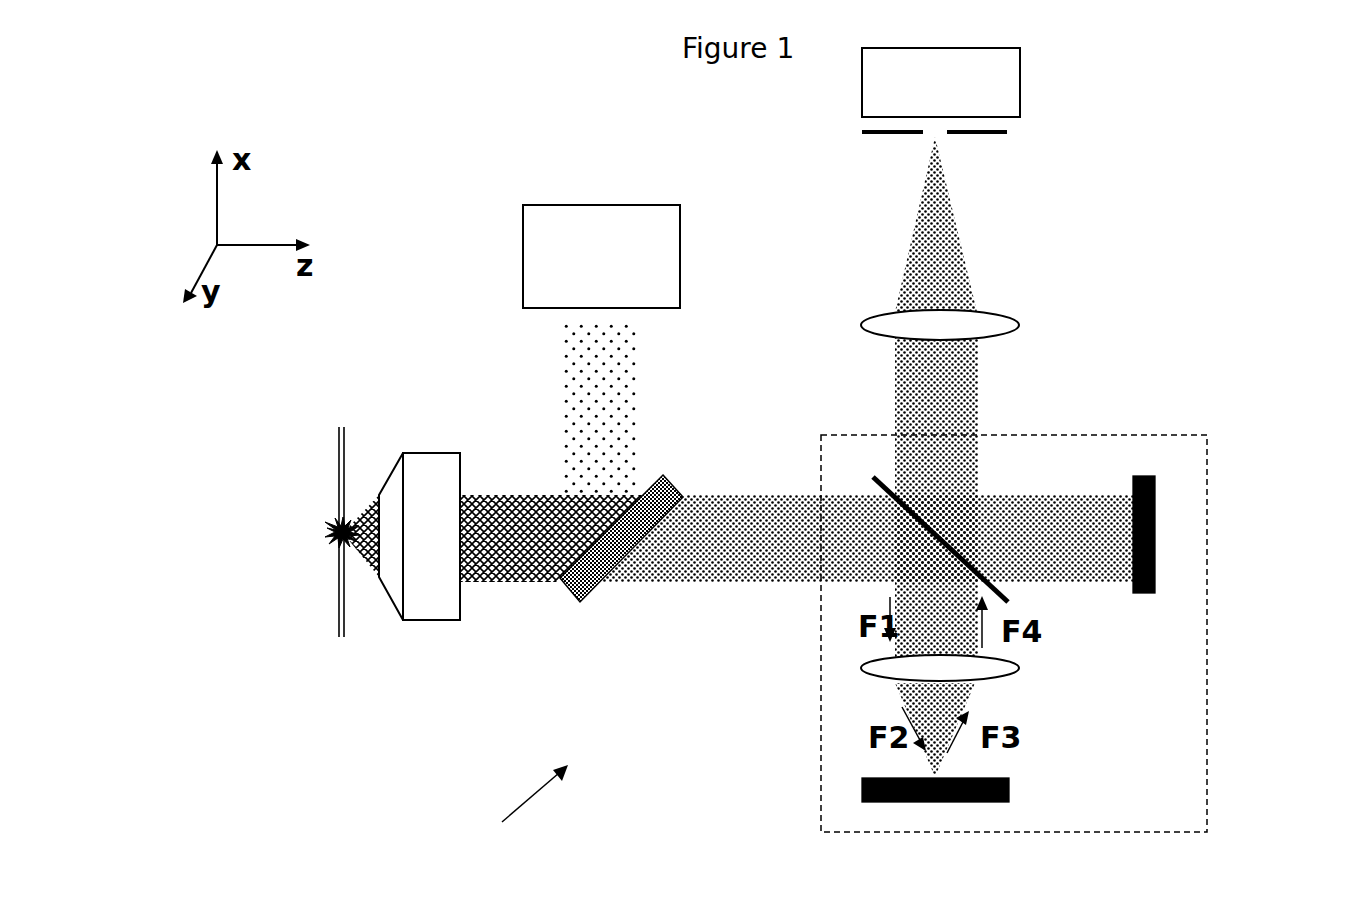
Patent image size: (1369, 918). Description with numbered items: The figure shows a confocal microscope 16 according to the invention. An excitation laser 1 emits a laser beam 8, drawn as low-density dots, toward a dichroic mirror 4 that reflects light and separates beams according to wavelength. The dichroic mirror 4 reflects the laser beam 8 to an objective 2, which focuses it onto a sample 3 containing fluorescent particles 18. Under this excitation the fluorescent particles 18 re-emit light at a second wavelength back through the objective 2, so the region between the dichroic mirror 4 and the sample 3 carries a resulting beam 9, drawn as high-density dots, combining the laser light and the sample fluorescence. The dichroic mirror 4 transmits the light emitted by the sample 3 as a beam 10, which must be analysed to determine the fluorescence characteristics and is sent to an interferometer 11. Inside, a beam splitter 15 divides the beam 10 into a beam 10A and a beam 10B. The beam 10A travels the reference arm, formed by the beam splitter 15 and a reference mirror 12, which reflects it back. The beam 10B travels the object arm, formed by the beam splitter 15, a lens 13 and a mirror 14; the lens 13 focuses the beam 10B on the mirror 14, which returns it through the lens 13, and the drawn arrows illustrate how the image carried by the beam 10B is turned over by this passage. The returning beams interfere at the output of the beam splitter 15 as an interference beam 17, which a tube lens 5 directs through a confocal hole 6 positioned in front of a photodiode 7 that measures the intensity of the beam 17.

The excitation laser 1 is at (548, 205).
The objective 2 is at (443, 617).
The sample 3 is at (338, 453).
The dichroic mirror 4 is at (590, 587).
The tube lens 5 is at (1008, 323).
The confocal hole 6 is at (883, 133).
The photodiode 7 is at (1020, 72).
The laser beam 8 is at (575, 398).
The resulting beam 9 is at (510, 583).
The light beam 10 is at (685, 568).
The beam 10A is at (1015, 505).
The beam 10B is at (960, 698).
The interferometer 11 is at (1207, 758).
The reference mirror 12 is at (1155, 508).
The lens 13 is at (870, 675).
The mirror 14 is at (987, 800).
The beam splitter 15 is at (875, 488).
The confocal microscope 16 is at (504, 820).
The interference beam 17 is at (902, 383).
The fluorescent particles 18 is at (333, 538).